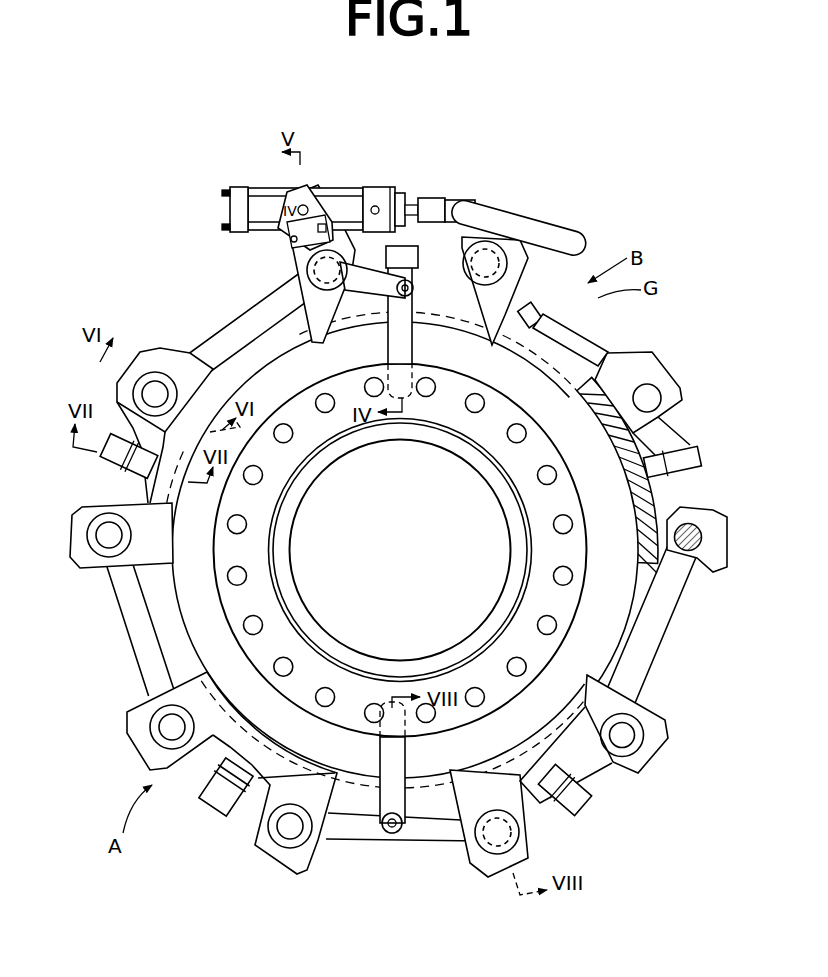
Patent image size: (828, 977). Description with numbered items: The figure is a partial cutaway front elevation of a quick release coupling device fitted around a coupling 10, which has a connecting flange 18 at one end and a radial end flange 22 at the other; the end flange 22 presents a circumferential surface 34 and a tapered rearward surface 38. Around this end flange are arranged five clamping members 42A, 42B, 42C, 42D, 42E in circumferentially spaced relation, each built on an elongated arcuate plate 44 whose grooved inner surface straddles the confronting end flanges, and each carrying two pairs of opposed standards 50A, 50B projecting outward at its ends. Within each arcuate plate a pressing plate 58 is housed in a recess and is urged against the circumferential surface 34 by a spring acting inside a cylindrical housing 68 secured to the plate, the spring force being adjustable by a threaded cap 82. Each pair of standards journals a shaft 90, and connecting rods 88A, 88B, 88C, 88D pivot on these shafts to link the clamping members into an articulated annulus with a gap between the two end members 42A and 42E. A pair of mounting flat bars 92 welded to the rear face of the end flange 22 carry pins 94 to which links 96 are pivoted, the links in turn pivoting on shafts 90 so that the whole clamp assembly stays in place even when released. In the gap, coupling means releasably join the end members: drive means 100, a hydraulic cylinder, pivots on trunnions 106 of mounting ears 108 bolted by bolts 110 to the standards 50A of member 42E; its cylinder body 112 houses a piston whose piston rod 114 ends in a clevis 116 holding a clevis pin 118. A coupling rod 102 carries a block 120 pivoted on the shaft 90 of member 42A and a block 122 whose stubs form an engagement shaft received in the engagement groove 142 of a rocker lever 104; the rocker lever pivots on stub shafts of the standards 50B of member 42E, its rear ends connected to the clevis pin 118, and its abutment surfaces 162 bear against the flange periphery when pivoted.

The coupling 10 is at (640, 648).
The connecting flange 18 is at (464, 426).
The end flange 22 is at (511, 393).
The circumferential surface 34 is at (513, 347).
The rearward surface 38 is at (533, 370).
The clamping member 42A is at (652, 438).
The clamping member 42B is at (627, 783).
The clamping member 42C is at (262, 866).
The clamping member 42D is at (68, 538).
The clamping member 42E is at (437, 284).
The arcuate plate 44 is at (325, 344).
The standard 50A is at (280, 252).
The standard 50B is at (518, 262).
The pressing plate 58 is at (633, 487).
The cylindrical housing 68 is at (240, 790).
The cap 82 is at (222, 805).
The connecting rod 88A is at (668, 636).
The connecting rod 88B is at (340, 841).
The connecting rod 88C is at (138, 665).
The connecting rod 88D is at (225, 335).
The shaft 90 is at (300, 272).
The mounting flat bar 92 is at (390, 353).
The pin 94 is at (410, 300).
The link 96 is at (350, 295).
The drive means 100 is at (255, 183).
The coupling rod 102 is at (578, 335).
The rocker lever 104 is at (542, 220).
The trunnion 106 is at (290, 195).
The mounting ear 108 is at (320, 186).
The bolt 110 is at (282, 238).
The cylinder body 112 is at (350, 205).
The piston rod 114 is at (428, 198).
The clevis 116 is at (452, 200).
The clevis pin 118 is at (468, 205).
The block 120 is at (670, 350).
The block 122 is at (540, 318).
The engagement groove 142 is at (503, 203).
The abutment surface 162 is at (586, 243).